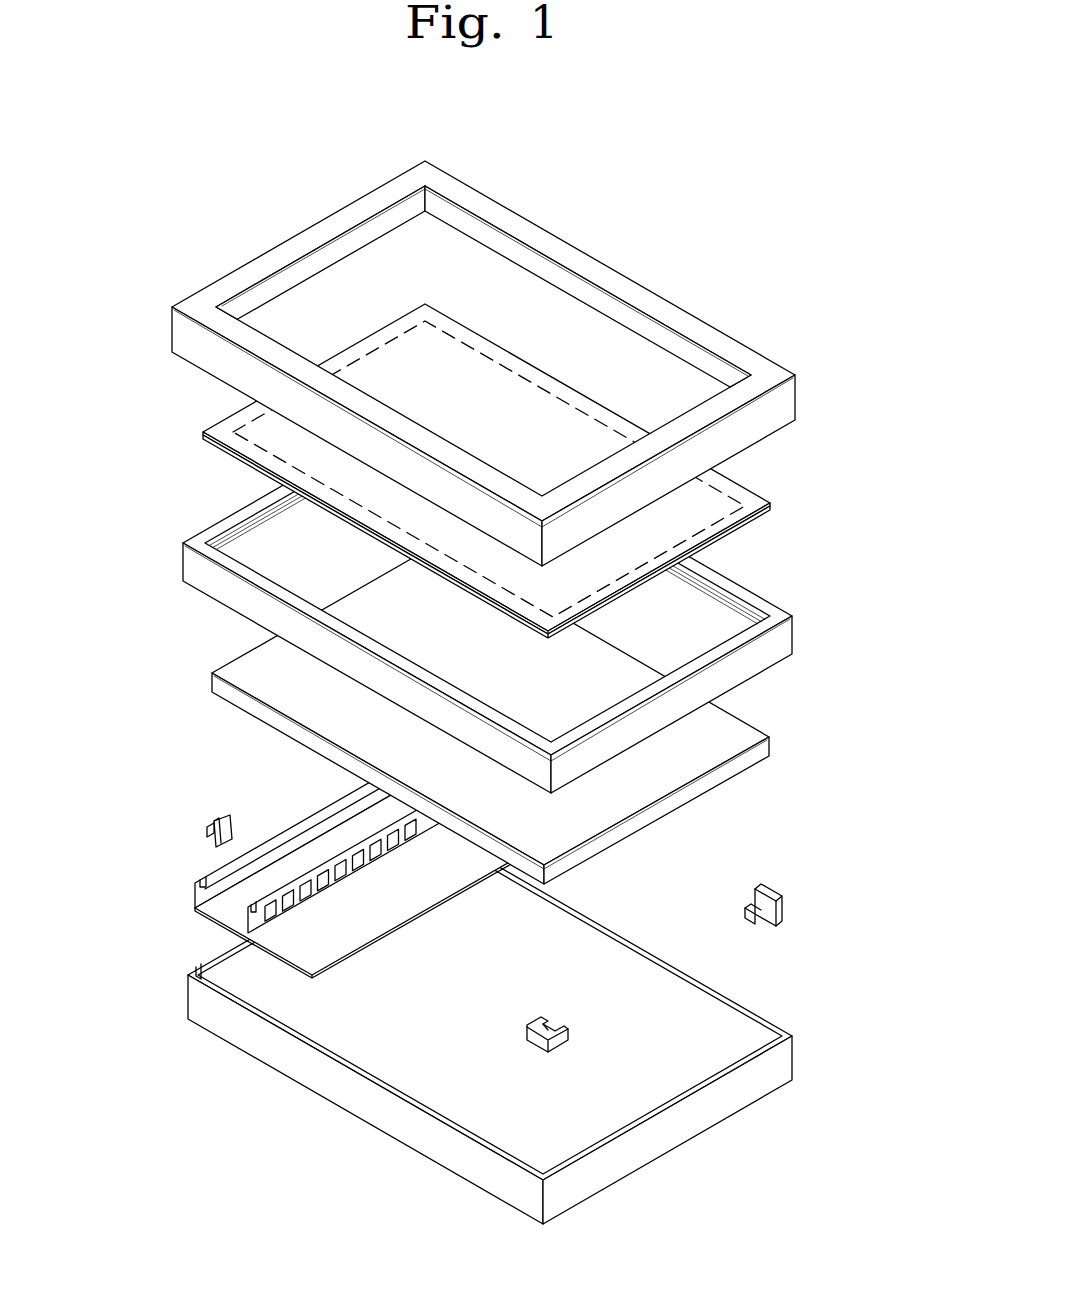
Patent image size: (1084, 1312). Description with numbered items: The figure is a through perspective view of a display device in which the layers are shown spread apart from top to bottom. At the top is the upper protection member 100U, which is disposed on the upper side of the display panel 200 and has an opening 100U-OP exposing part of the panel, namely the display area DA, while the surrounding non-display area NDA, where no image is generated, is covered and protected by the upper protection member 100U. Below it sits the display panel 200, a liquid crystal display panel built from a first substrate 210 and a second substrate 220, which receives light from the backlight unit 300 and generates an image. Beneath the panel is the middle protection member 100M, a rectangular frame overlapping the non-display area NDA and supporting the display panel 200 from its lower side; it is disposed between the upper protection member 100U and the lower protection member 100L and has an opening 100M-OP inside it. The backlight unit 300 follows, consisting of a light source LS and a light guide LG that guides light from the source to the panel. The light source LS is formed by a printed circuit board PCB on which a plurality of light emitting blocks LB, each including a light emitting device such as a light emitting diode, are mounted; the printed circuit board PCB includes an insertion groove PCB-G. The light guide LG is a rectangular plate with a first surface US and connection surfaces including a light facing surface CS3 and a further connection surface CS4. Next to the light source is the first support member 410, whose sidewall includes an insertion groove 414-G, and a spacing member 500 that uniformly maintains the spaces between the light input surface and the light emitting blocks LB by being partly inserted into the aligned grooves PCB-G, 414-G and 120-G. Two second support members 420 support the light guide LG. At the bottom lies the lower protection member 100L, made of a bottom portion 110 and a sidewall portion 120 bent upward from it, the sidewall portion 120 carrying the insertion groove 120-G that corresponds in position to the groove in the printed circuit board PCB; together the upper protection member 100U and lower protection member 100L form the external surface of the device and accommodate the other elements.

The upper protection member 100U is at (531, 363).
The opening 100U-OP is at (542, 321).
The display panel 200 is at (526, 471).
The second substrate 220 is at (772, 503).
The first substrate 210 is at (774, 511).
The display area DA is at (262, 429).
The non-display area NDA is at (232, 438).
The middle protection member 100M is at (555, 598).
The opening 100M-OP is at (693, 635).
The backlight unit 300 is at (475, 738).
The light guide LG is at (504, 723).
The light source LS is at (289, 818).
The light emitting blocks LB is at (358, 850).
The printed circuit board PCB is at (337, 856).
The first surface US is at (734, 737).
The connection surface CS3 is at (758, 747).
The connection surface CS4 is at (528, 865).
The spacing member 500 is at (212, 815).
The first support member 410 is at (328, 857).
The insertion groove 414-G is at (218, 870).
The insertion groove PCB-G is at (252, 911).
The insertion groove 120-G is at (199, 968).
The second support member 420 is at (778, 908).
The sidewall portion 120 is at (337, 1083).
The bottom portion 110 is at (460, 1087).
The lower protection member 100L is at (442, 1027).